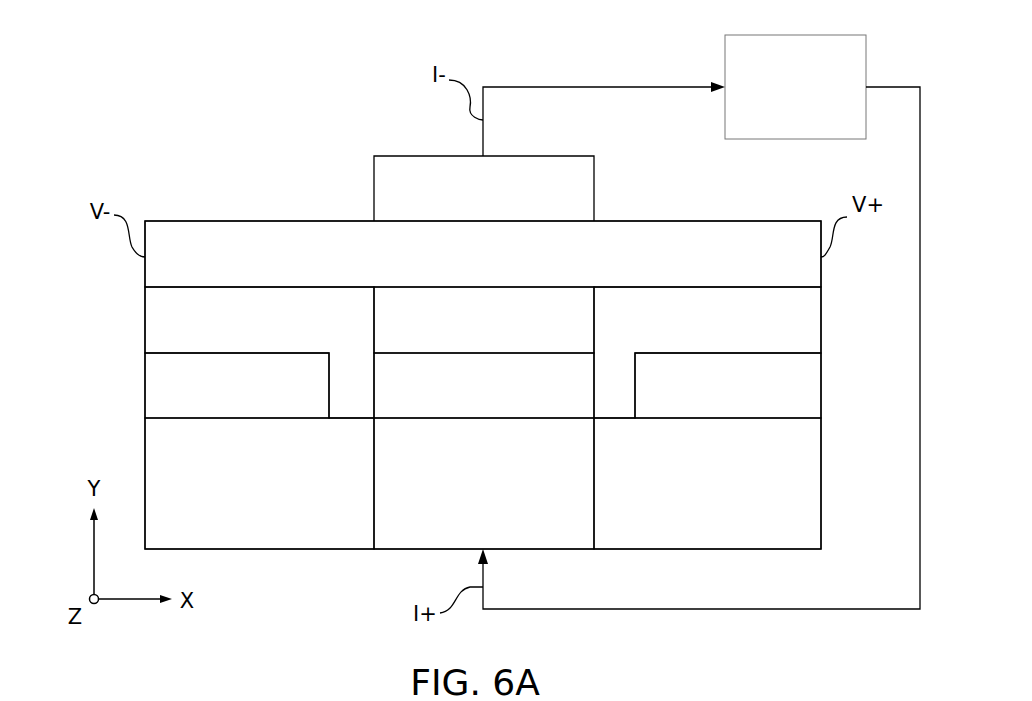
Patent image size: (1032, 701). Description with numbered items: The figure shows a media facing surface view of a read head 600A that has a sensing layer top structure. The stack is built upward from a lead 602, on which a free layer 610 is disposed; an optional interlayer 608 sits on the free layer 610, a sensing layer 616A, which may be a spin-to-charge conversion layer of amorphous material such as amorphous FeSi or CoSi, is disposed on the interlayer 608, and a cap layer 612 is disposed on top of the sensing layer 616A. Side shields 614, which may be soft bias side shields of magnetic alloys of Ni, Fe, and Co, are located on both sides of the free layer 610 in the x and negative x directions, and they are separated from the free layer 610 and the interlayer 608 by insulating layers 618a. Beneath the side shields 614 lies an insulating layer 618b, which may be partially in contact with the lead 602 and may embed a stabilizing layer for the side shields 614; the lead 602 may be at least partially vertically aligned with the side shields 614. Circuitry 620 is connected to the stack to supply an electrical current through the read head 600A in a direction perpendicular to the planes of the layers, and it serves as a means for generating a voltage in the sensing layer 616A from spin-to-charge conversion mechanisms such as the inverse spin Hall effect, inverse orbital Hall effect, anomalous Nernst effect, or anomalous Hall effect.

The read head 600A is at (156, 76).
The lead 602 is at (460, 493).
The interlayer 608 is at (460, 330).
The free layer 610 is at (460, 395).
The cap layer 612 is at (460, 199).
The side shields 614 is at (214, 394).
The sensing layer 616A is at (510, 264).
The insulating layers 618a is at (286, 329).
The insulating layer 618b is at (229, 492).
The circuitry 620 is at (772, 96).